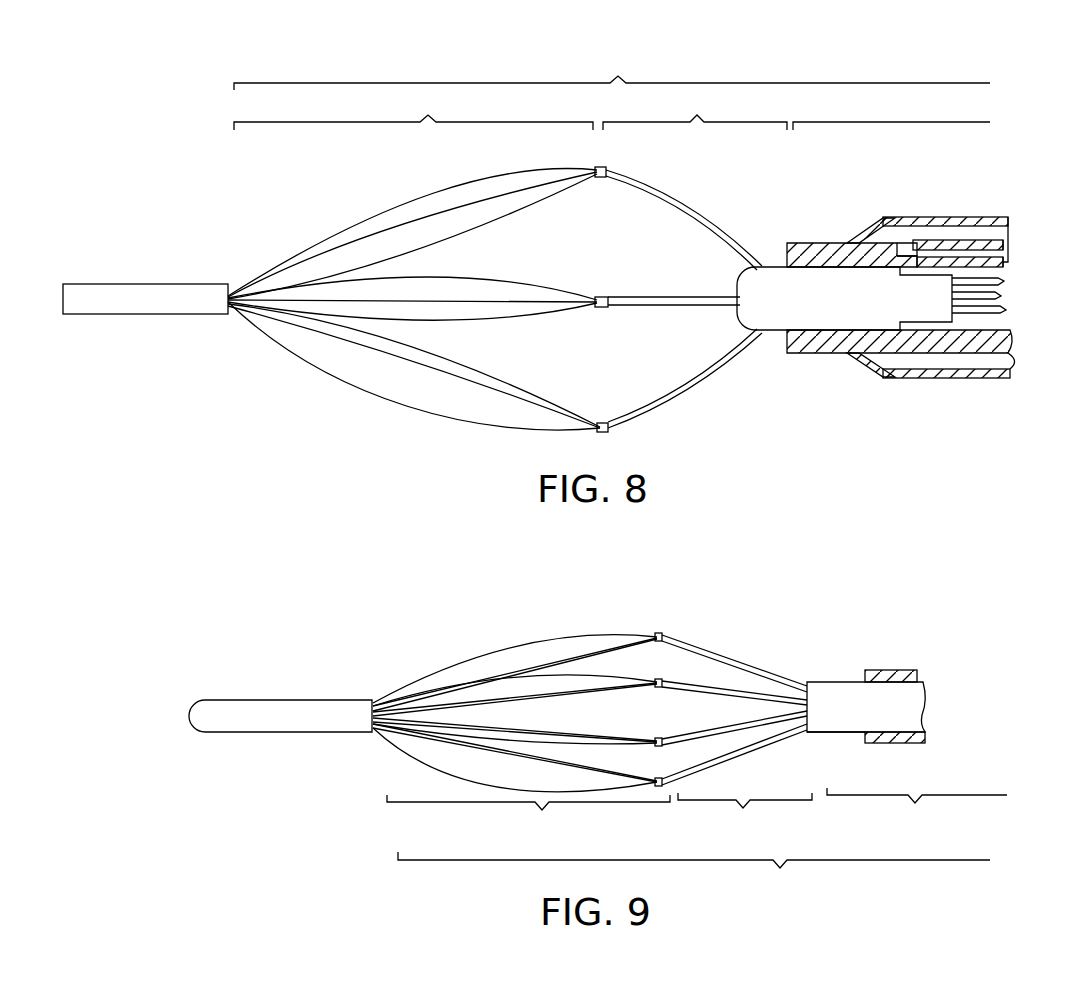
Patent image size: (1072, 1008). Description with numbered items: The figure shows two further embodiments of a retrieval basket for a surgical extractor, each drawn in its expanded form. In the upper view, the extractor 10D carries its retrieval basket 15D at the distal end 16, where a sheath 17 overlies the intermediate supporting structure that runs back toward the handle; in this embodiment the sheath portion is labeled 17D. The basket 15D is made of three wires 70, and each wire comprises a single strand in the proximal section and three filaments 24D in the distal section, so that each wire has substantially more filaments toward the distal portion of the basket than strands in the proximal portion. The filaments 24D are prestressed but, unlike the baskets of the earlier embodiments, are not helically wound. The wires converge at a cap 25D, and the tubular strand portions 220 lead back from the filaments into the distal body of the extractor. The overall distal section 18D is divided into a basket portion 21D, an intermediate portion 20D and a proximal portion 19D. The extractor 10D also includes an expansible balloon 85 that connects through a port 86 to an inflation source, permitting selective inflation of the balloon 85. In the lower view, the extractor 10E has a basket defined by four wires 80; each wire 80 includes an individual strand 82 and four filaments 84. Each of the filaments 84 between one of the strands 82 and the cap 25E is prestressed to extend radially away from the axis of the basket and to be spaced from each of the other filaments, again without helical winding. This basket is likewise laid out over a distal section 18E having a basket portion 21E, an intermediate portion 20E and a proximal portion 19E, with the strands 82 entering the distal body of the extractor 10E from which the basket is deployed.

In FIG. 8, the extractor 10D is at (836, 285).
In FIG. 8, the retrieval basket 15D is at (690, 186).
In FIG. 8, the distal end 16 is at (827, 222).
In FIG. 9, the distal end 16 is at (850, 733).
In FIG. 9, the sheath 17 is at (916, 670).
In FIG. 8, the catheter tube 17D is at (817, 355).
In FIG. 8, the distal section 18D is at (612, 68).
In FIG. 8, the proximal portion 19D is at (907, 121).
In FIG. 8, the intermediate portion 20D is at (695, 109).
In FIG. 8, the basket portion 21D is at (413, 109).
In FIG. 8, the filaments 24D is at (368, 262).
In FIG. 8, the shaft 25D is at (190, 283).
In FIG. 8, the wires 70 is at (1006, 310).
In FIG. 8, the expansible balloon 85 is at (972, 217).
In FIG. 8, the port 86 is at (900, 243).
In FIG. 8, the tubes 220 is at (672, 205).
In FIG. 9, the extractor 10E is at (875, 703).
In FIG. 9, the distal section 18E is at (694, 873).
In FIG. 9, the proximal portion 19E is at (917, 815).
In FIG. 9, the intermediate portion 20E is at (745, 818).
In FIG. 9, the basket portion 21E is at (528, 819).
In FIG. 9, the cap 25E is at (323, 699).
In FIG. 9, the wires 80 is at (700, 646).
In FIG. 9, the strand 82 is at (757, 665).
In FIG. 9, the filaments 84 is at (515, 672).